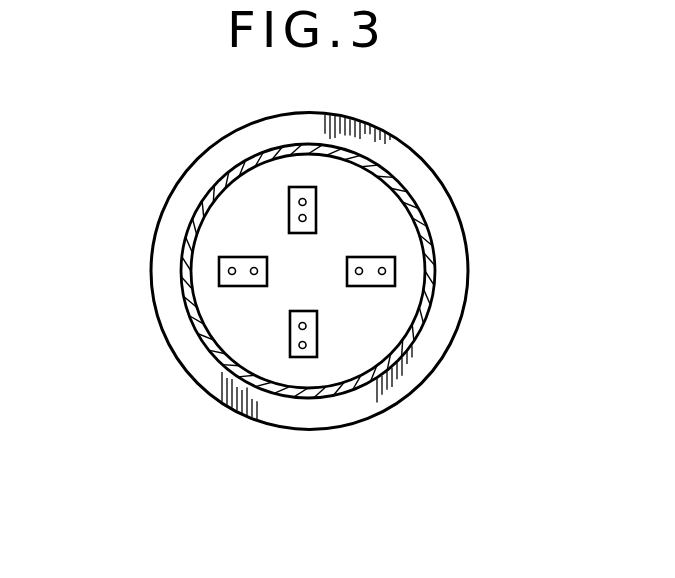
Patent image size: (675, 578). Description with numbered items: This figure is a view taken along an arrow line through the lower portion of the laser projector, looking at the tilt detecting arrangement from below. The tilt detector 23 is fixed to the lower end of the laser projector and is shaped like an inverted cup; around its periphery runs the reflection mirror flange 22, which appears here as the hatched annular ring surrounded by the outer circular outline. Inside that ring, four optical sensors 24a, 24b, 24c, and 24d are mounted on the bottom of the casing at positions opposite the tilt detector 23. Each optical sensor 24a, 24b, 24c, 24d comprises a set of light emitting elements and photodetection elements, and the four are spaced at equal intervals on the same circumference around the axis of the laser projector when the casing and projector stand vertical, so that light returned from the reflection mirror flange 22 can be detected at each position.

The reflection mirror flange 22 is at (470, 270).
The tilt detector 23 is at (410, 200).
The optical sensor 24a is at (243, 288).
The optical sensor 24b is at (318, 197).
The optical sensor 24c is at (393, 287).
The optical sensor 24d is at (318, 345).